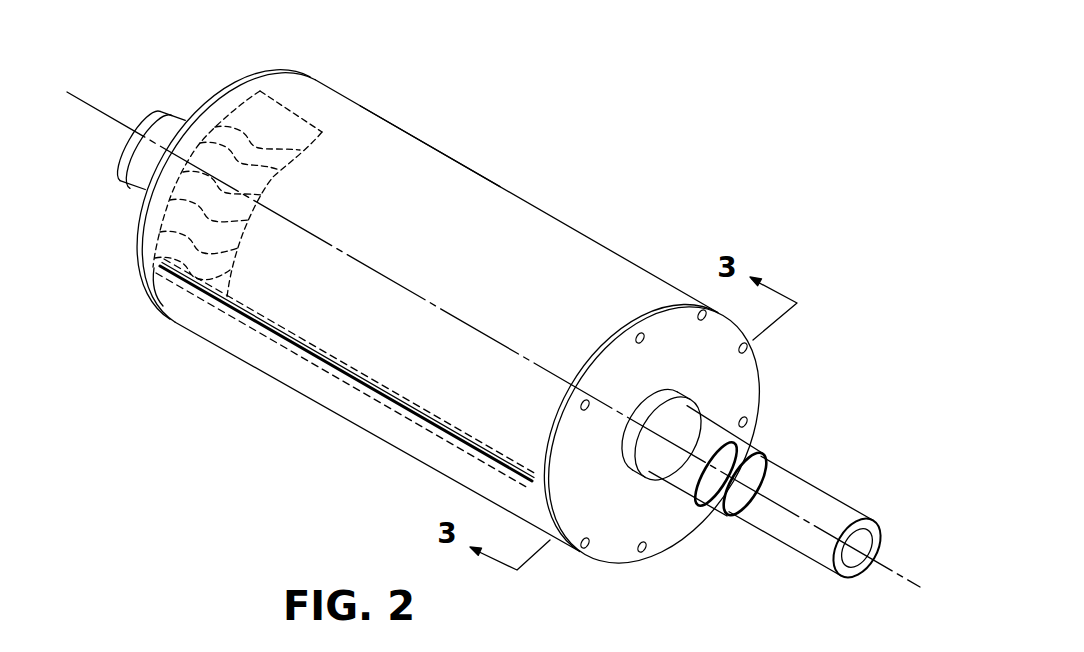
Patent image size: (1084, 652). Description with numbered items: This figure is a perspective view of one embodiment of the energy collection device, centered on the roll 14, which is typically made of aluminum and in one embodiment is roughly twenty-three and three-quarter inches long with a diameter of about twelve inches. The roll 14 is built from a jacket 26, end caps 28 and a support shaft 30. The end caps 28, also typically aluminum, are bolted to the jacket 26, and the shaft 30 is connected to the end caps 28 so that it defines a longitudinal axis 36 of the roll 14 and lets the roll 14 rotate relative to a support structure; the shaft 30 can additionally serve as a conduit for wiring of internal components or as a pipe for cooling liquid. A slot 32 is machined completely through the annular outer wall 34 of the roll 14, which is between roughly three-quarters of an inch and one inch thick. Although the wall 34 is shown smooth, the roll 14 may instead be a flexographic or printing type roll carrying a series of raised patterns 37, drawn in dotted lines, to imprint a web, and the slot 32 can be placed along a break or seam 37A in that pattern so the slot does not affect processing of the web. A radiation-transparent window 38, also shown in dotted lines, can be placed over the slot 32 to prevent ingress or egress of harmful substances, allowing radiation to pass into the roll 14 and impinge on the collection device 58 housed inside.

The roll 14 is at (600, 153).
The jacket 26 is at (603, 245).
The end caps 28 is at (265, 68).
The support shaft 30 is at (171, 118).
The slot 32 is at (209, 296).
The annular outer wall 34 is at (360, 128).
The longitudinal axis 36 is at (903, 577).
The raised patterns 37 is at (170, 177).
The seam 37A is at (157, 268).
The window 38 is at (364, 399).
The collection device 58 is at (162, 300).